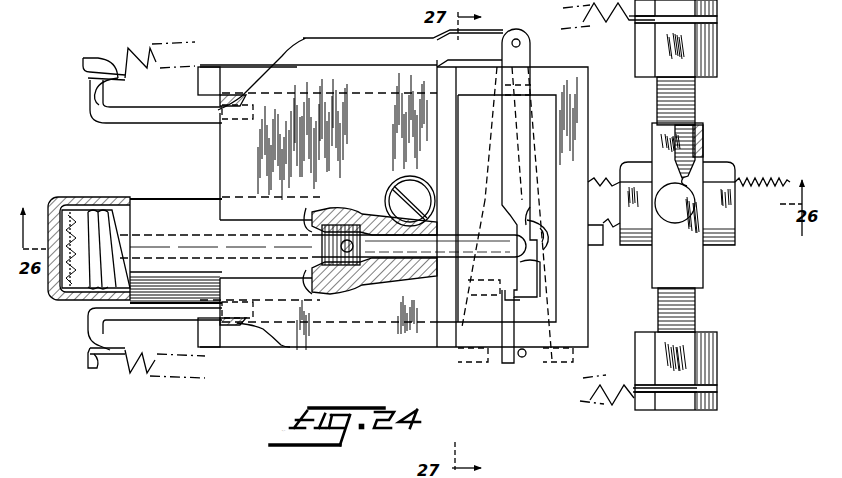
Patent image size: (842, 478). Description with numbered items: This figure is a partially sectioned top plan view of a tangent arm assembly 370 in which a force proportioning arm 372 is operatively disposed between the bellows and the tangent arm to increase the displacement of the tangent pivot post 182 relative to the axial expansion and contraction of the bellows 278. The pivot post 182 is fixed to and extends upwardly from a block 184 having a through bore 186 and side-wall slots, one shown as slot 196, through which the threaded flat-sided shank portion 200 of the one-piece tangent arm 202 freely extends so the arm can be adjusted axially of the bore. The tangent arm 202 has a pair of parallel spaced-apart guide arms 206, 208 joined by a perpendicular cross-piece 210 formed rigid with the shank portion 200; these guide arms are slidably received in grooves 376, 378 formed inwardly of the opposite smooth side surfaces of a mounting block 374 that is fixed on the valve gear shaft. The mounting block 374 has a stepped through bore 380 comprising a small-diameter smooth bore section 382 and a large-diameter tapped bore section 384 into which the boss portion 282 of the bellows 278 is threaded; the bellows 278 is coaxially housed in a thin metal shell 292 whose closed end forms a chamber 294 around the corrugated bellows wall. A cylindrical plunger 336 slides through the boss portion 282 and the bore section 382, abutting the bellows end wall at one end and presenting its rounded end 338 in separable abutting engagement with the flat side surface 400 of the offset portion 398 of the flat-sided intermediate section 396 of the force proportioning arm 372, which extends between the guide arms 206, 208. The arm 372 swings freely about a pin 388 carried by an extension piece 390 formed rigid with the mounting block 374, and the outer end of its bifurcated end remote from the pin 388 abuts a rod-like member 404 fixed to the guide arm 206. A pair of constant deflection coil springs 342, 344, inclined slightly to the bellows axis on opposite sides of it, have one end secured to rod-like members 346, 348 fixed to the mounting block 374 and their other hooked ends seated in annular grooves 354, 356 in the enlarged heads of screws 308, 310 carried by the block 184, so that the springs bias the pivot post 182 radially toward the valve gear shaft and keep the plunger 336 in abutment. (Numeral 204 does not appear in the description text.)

The tangent pivot post 182 is at (664, 242).
The block 184 is at (691, 128).
The through bore 186 is at (703, 138).
The slot 196 is at (698, 166).
The shank portion 200 is at (784, 186).
The tangent arm 202 is at (590, 290).
The hex nuts 204 is at (632, 246).
The guide arm 206 is at (449, 342).
The guide arm 208 is at (471, 92).
The cross-piece 210 is at (580, 109).
The bellows 278 is at (99, 208).
The boss portion 282 is at (306, 216).
The shell 292 is at (163, 210).
The chamber 294 is at (66, 208).
The screw 308 is at (719, 353).
The screw 310 is at (719, 63).
The plunger 336 is at (372, 260).
The rounded end 338 is at (536, 211).
The constant deflection coil spring 342 is at (136, 376).
The constant deflection coil spring 344 is at (131, 78).
The rod-like member 346 is at (129, 317).
The rod-like member 348 is at (153, 124).
The annular groove 354 is at (718, 388).
The annular groove 356 is at (718, 22).
The tangent arm assembly 370 is at (486, 360).
The force proportioning arm 372 is at (510, 366).
The mounting block 374 is at (372, 344).
The groove 376 is at (234, 334).
The groove 378 is at (233, 98).
The stepped through bore 380 is at (374, 238).
The bore section 382 is at (392, 264).
The bore section 384 is at (312, 282).
The pin 388 is at (518, 32).
The extension piece 390 is at (488, 40).
The intermediate section 396 is at (506, 166).
The offset portion 398 is at (545, 226).
The flat side surface 400 is at (528, 283).
The rod-like member 404 is at (526, 360).